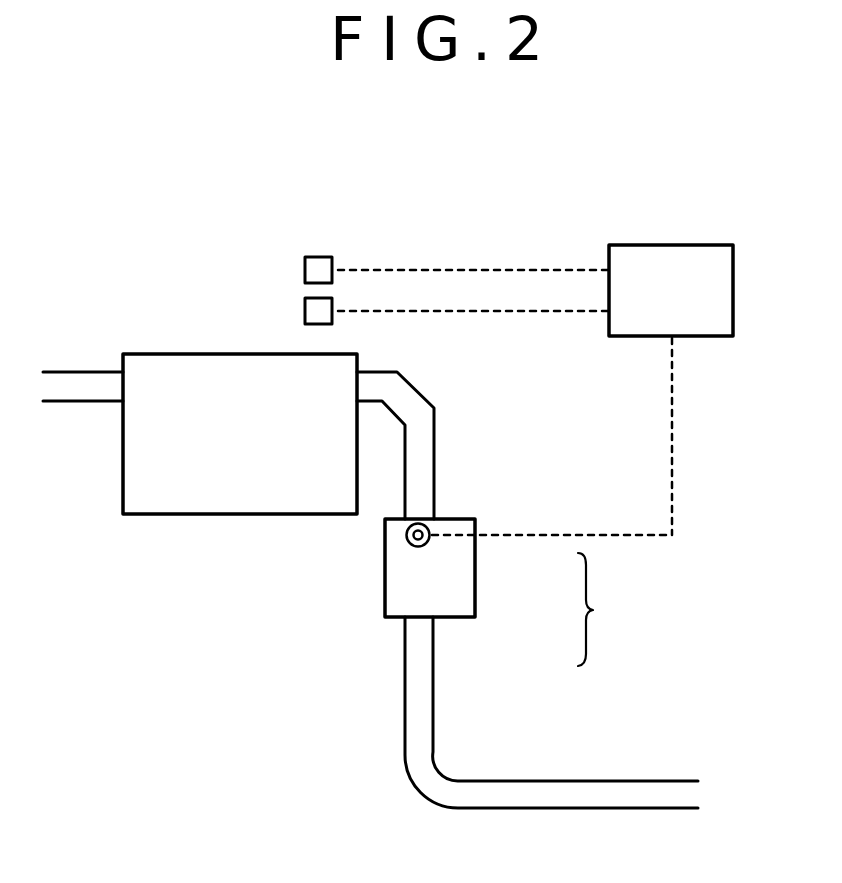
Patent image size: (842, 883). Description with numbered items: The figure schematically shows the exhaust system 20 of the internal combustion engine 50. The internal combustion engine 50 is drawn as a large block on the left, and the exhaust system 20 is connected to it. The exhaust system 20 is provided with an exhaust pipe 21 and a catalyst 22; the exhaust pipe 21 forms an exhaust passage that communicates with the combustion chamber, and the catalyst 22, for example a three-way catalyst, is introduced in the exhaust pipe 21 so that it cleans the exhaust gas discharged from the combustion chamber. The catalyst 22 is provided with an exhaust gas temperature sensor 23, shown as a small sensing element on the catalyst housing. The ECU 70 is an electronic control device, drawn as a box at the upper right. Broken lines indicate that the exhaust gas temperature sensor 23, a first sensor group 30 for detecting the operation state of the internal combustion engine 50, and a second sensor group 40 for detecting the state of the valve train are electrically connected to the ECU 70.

The exhaust system 20 is at (606, 609).
The exhaust pipe 21 is at (434, 645).
The catalyst 22 is at (475, 574).
The exhaust gas temperature sensor 23 is at (424, 522).
The first sensor group 30 is at (305, 269).
The second sensor group 40 is at (305, 311).
The internal combustion engine 50 is at (237, 514).
The ECU 70 is at (733, 289).